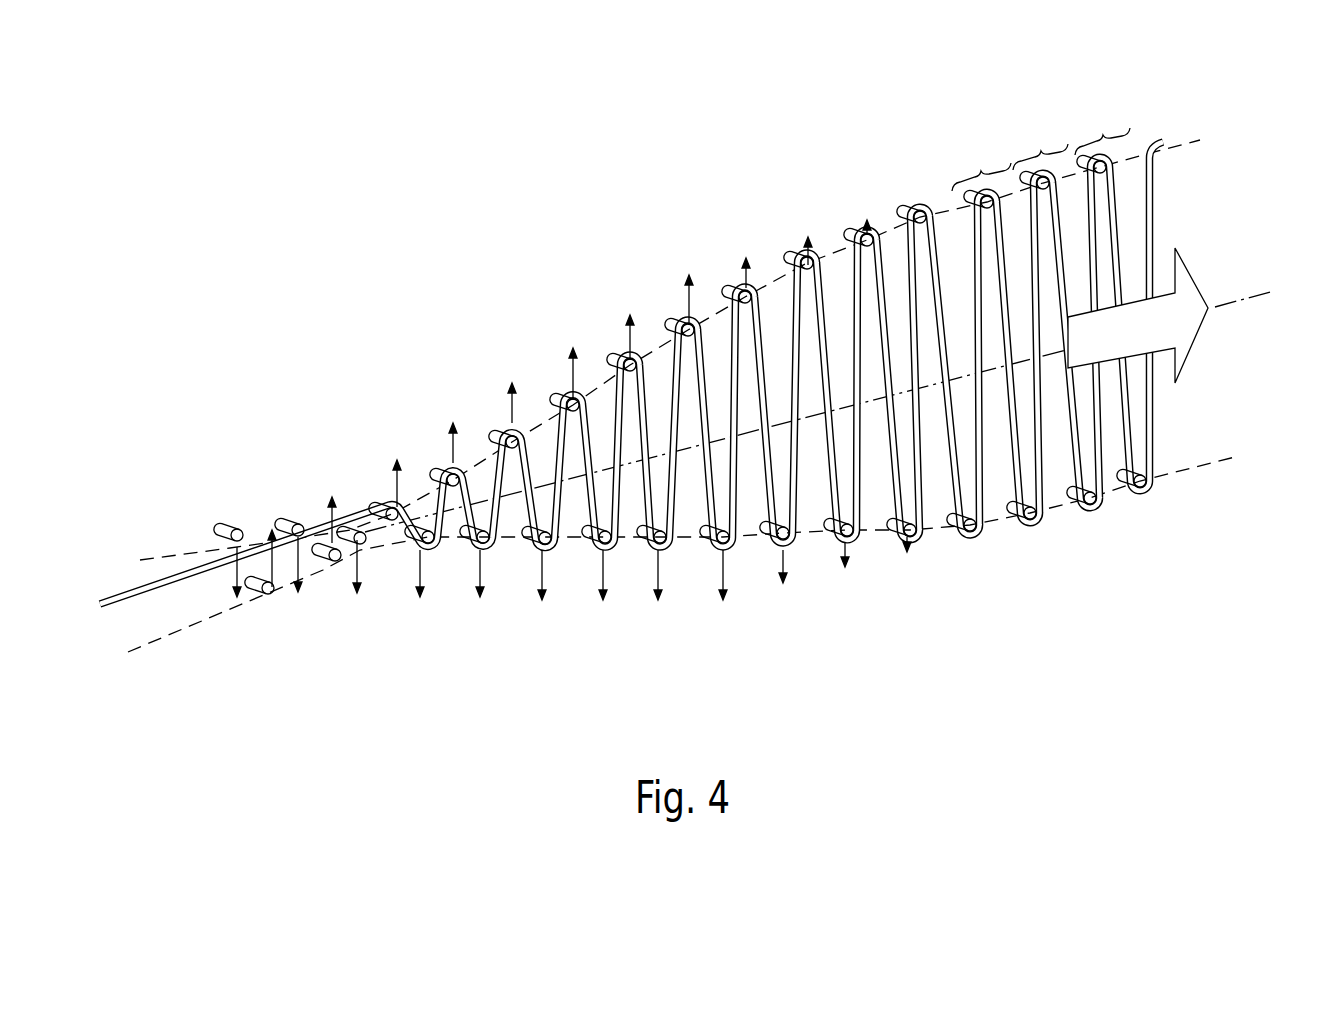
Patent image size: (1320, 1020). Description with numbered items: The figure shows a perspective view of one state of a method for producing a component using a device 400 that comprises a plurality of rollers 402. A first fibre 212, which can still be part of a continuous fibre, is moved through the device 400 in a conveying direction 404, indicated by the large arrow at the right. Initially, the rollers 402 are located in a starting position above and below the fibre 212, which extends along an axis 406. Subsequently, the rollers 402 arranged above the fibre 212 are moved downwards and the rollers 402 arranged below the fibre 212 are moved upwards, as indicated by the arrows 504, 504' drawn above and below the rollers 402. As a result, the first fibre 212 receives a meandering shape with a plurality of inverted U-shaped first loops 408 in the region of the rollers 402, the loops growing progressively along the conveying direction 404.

The device 400 is at (336, 211).
The first fibre 212 is at (150, 602).
The rollers 402 is at (568, 400).
The conveying direction 404 is at (1185, 330).
The axis 406 is at (1238, 297).
The first loops 408 is at (1041, 144).
The arrow 504 is at (569, 403).
The arrow 504' is at (572, 600).